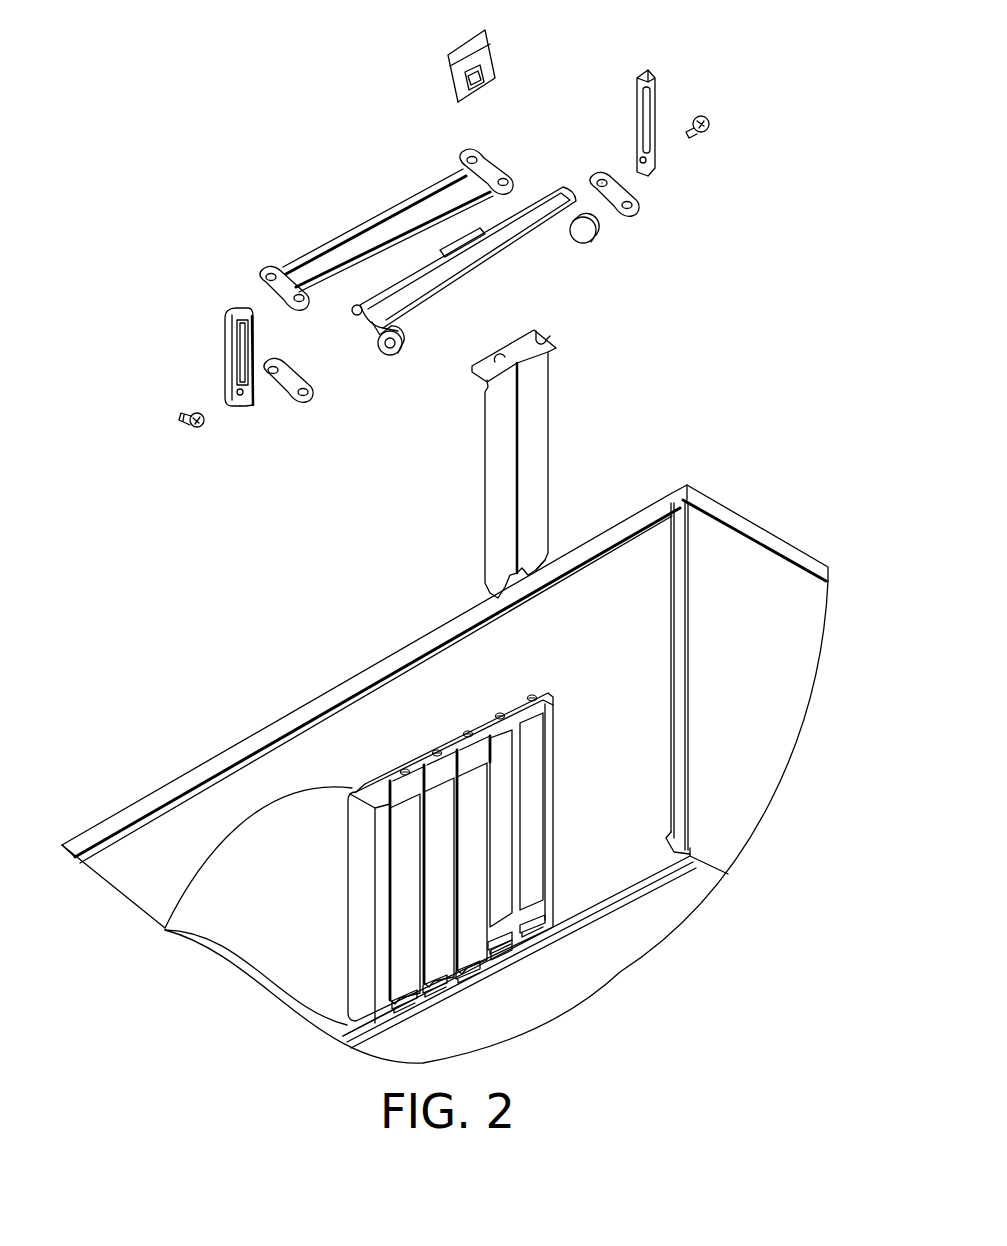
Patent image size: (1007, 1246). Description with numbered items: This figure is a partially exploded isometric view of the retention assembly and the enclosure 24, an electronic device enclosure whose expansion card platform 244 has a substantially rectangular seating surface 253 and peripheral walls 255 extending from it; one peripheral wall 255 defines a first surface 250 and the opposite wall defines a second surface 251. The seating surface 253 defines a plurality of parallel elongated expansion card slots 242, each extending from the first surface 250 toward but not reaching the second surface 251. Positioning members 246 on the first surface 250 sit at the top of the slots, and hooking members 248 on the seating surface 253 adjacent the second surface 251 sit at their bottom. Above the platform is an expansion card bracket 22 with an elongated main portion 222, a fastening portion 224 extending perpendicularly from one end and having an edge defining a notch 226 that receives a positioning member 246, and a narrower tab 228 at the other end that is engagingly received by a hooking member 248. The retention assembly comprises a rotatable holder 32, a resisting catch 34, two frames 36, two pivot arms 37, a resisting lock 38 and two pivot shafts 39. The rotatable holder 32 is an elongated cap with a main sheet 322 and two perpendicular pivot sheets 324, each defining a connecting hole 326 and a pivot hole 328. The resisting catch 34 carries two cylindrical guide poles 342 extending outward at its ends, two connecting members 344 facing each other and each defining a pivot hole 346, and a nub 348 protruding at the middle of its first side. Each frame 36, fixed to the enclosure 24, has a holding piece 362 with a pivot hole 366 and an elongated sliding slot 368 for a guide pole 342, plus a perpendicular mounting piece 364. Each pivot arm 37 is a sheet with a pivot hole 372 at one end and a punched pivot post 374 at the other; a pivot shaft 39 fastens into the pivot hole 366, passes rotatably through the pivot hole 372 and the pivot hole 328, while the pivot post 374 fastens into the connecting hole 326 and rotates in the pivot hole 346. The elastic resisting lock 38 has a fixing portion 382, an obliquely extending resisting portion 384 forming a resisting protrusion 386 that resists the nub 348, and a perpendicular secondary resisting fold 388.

The expansion card bracket 22 is at (508, 455).
The elongated main portion 222 is at (540, 408).
The fastening portion 224 is at (552, 352).
The notch 226 is at (545, 338).
The tab 228 is at (538, 562).
The enclosure 24 is at (750, 565).
The expansion card slot 242 is at (527, 833).
The expansion card platform 244 is at (431, 813).
The positioning member 246 is at (533, 693).
The hooking member 248 is at (503, 948).
The first surface 250 is at (483, 722).
The second surface 251 is at (465, 992).
The seating surface 253 is at (550, 790).
The peripheral wall 255 is at (360, 862).
The rotatable holder 32 is at (412, 256).
The main sheet 322 is at (347, 250).
The pivot sheet 324 is at (512, 152).
The connecting hole 326 is at (507, 178).
The pivot hole 328 is at (471, 157).
The resisting catch 34 is at (455, 305).
The guide pole 342 is at (354, 314).
The connecting member 344 is at (404, 348).
The pivot hole 346 is at (385, 352).
The nub 348 is at (468, 247).
The frame 36 is at (232, 375).
The holding piece 362 is at (247, 408).
The mounting piece 364 is at (227, 337).
The pivot hole 366 is at (236, 392).
The sliding slot 368 is at (246, 334).
The pivot arm 37 is at (640, 144).
The pivot hole 372 is at (600, 180).
The pivot post 374 is at (636, 205).
The resisting lock 38 is at (458, 60).
The fixing portion 382 is at (478, 44).
The resisting portion 384 is at (487, 62).
The resisting protrusion 386 is at (480, 82).
The secondary resisting fold 388 is at (455, 99).
The pivot shaft 39 is at (180, 417).